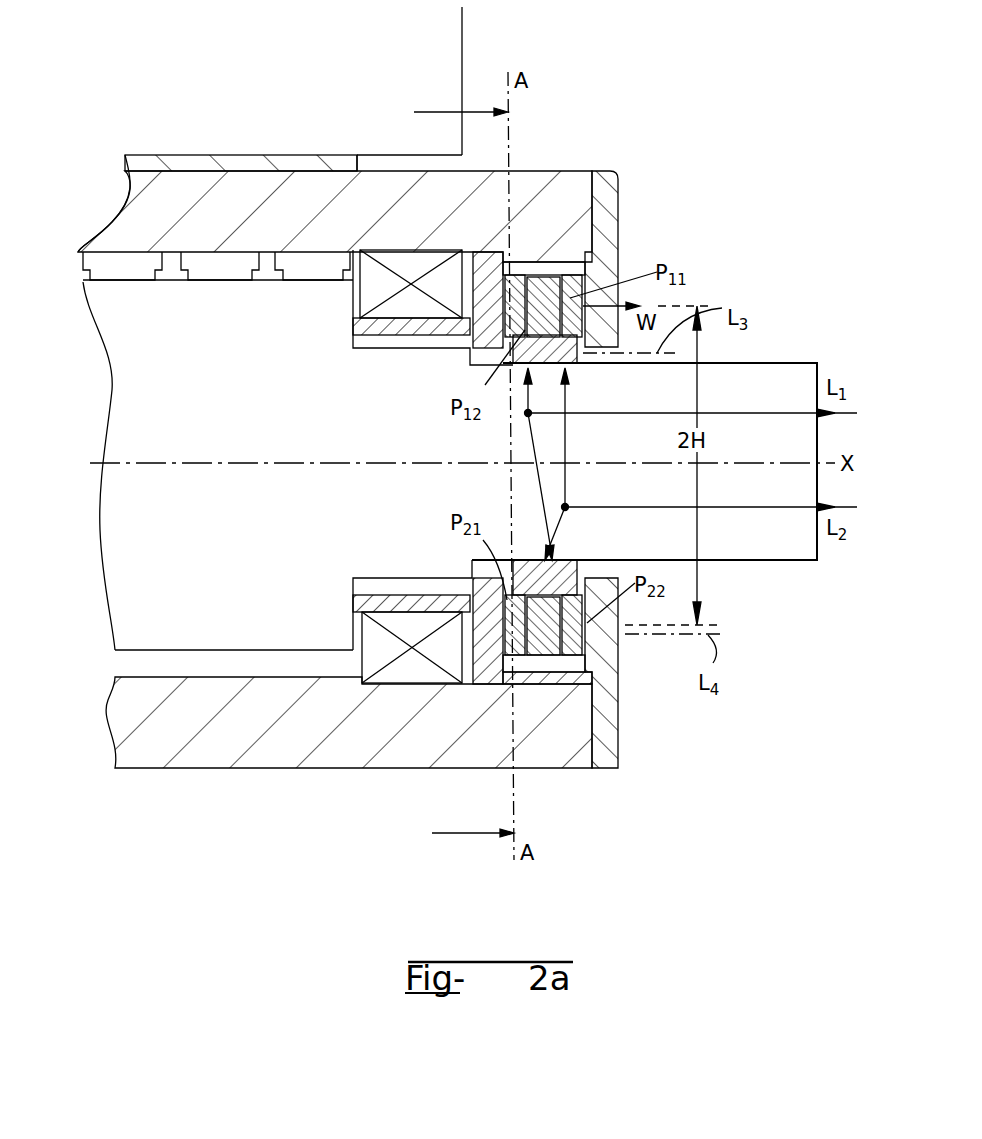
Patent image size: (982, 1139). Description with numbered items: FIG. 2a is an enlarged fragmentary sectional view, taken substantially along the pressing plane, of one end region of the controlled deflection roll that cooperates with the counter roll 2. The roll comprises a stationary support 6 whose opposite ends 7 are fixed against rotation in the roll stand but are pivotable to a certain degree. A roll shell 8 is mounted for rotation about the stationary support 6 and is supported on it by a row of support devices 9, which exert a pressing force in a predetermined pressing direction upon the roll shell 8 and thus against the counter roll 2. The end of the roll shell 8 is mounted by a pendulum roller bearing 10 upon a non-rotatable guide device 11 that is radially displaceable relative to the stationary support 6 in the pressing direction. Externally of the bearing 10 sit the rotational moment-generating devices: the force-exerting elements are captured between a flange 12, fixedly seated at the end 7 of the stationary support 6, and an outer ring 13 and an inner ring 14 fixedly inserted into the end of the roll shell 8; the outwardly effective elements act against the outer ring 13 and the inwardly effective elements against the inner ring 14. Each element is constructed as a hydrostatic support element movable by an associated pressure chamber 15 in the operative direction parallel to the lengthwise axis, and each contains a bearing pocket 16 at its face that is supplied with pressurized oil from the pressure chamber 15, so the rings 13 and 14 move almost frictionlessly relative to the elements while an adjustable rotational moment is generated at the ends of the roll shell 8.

The counter roll 2 is at (344, 80).
The stationary support 6 is at (300, 438).
The ends of the stationary support 7 is at (733, 388).
The roll shell 8 is at (540, 190).
The support devices 9 is at (293, 273).
The pendulum roller bearings 10 is at (385, 610).
The guide device 11 is at (423, 597).
The flange 12 is at (575, 365).
The outer ring 13 is at (607, 233).
The inner ring 14 is at (478, 330).
The pressure chamber 15 is at (593, 660).
The bearing pocket 16 is at (588, 628).